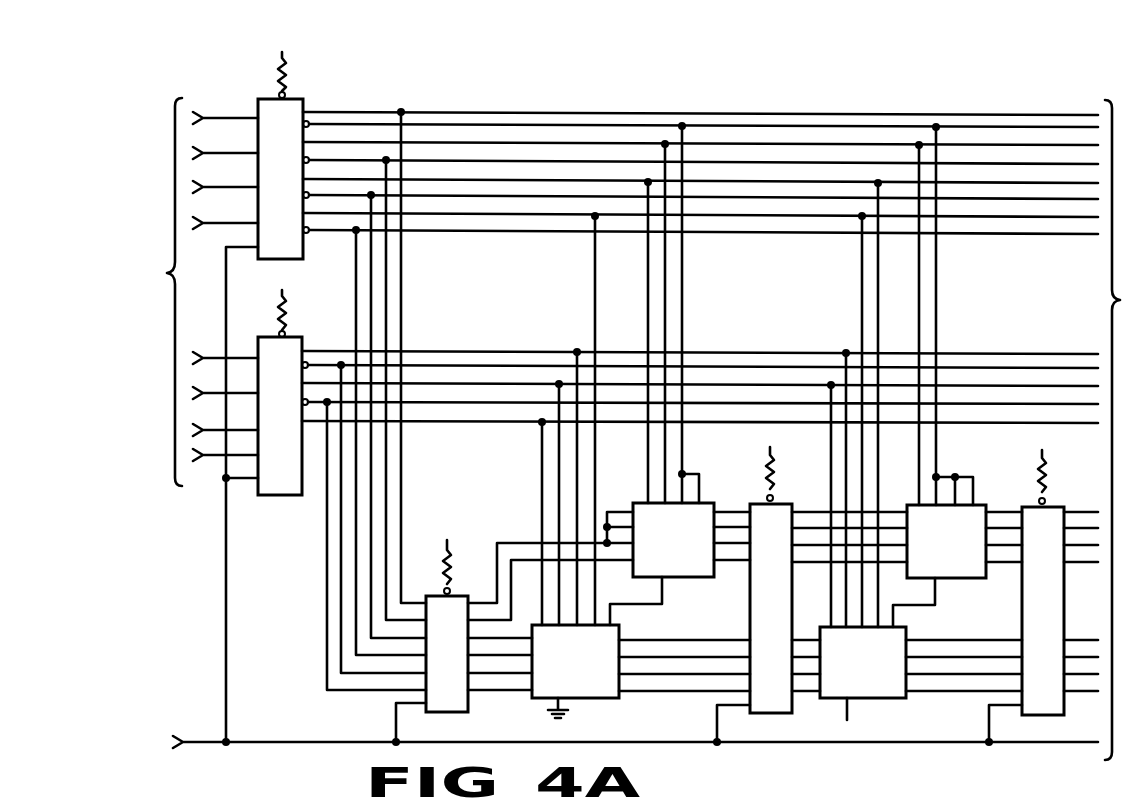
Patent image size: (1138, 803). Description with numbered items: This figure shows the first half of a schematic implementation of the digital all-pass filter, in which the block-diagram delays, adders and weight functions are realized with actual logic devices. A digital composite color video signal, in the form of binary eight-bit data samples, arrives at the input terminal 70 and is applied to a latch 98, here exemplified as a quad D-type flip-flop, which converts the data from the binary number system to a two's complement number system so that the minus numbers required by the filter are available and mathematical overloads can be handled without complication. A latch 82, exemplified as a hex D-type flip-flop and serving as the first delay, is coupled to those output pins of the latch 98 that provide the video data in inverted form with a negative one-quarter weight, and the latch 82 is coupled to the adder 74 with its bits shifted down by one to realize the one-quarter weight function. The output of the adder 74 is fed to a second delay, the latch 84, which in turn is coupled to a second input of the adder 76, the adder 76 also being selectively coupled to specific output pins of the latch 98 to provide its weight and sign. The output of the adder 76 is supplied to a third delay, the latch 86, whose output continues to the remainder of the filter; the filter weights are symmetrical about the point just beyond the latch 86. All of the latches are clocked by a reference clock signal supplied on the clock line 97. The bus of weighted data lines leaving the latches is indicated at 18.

The input terminal 70 is at (175, 333).
The latch 98 is at (306, 322).
The output data bus 18 is at (783, 297).
The first delay latch 82 is at (458, 593).
The adder 74 is at (653, 627).
The second delay latch 84 is at (786, 503).
The adder 76 is at (929, 631).
The third delay latch 86 is at (1058, 506).
The clock line 97 is at (199, 738).